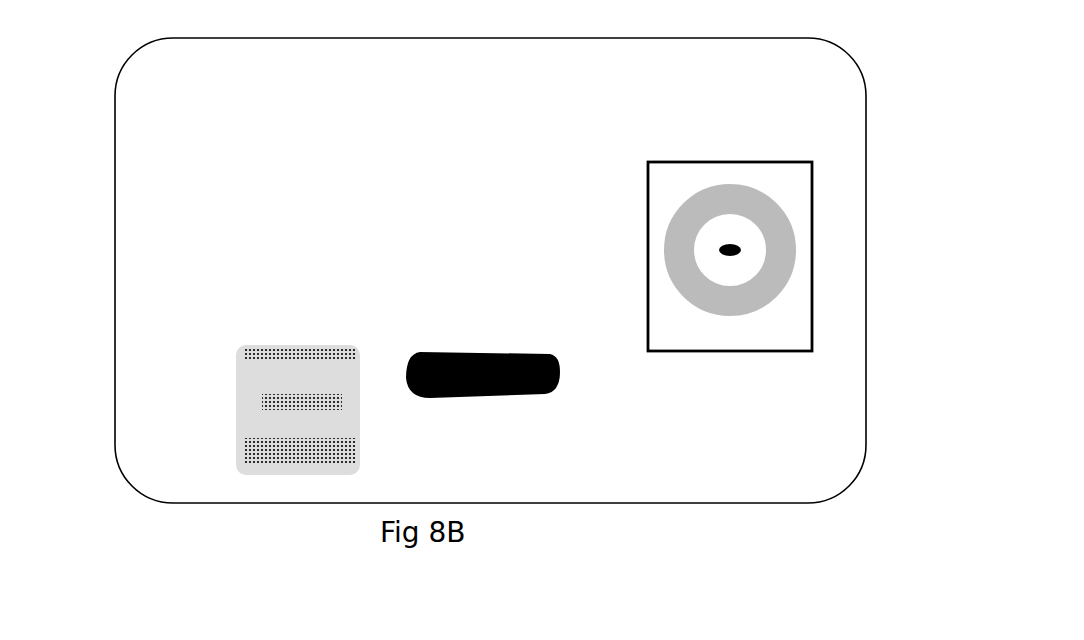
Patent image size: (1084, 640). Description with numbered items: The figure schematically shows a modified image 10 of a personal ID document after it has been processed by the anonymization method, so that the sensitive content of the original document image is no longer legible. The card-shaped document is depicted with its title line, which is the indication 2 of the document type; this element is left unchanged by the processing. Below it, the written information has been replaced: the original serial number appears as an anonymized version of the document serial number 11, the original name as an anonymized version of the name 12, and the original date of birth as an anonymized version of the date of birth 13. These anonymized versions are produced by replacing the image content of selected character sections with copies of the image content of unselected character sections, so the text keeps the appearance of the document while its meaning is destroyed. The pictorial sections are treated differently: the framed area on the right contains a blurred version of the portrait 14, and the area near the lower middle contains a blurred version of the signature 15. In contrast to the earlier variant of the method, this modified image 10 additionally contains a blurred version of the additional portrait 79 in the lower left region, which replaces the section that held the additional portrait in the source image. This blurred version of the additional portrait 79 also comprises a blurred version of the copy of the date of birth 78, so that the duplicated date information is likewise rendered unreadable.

The modified image 10 is at (857, 64).
The indication of the document type 2 is at (240, 98).
The anonymized version of the document serial number 11 is at (242, 183).
The anonymized version of the name 12 is at (232, 253).
The anonymized version of the date of birth 13 is at (587, 218).
The blurred version of the portrait 14 is at (815, 340).
The blurred version of the signature 15 is at (533, 404).
The blurred version of the additional portrait 79 is at (225, 460).
The blurred version of the copy of the date of birth 78 is at (109, 7).